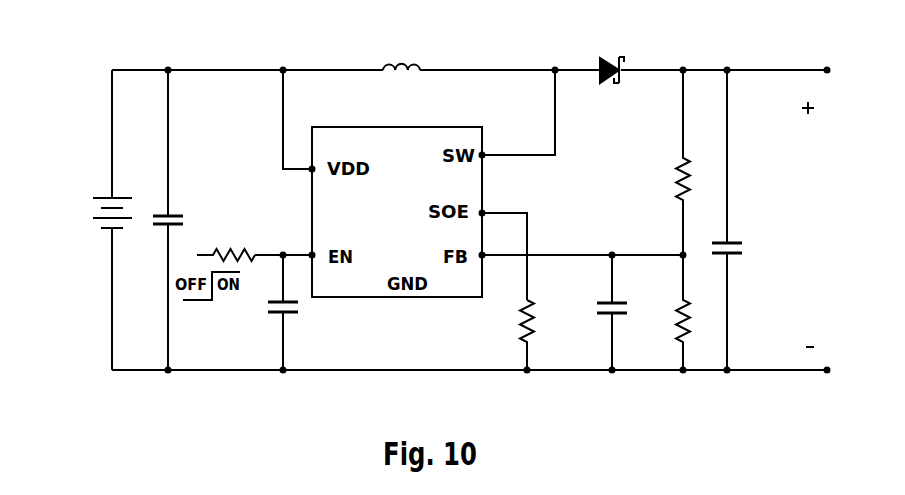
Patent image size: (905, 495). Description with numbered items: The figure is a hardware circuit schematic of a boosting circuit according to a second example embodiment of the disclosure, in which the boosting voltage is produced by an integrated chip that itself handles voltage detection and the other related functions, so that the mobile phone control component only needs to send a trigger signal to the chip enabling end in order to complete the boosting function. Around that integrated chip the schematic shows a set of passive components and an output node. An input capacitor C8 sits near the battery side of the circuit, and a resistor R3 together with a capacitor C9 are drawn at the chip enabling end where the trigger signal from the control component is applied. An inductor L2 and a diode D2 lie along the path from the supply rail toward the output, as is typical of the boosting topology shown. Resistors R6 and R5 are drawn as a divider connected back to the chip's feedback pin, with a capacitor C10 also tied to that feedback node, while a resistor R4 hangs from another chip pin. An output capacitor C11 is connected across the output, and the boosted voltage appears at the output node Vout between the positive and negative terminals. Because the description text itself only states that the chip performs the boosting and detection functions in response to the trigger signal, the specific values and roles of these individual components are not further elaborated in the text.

The input capacitor C8 is at (182, 220).
The enable resistor R3 is at (226, 243).
The enable capacitor C9 is at (297, 312).
The inductor L2 is at (401, 55).
The Schottky diode D2 is at (612, 58).
The feedback resistor (upper) R6 is at (698, 162).
The feedback resistor (lower) R5 is at (698, 312).
The SOE resistor R4 is at (542, 335).
The feedback capacitor C10 is at (632, 312).
The output capacitor C11 is at (746, 220).
The output voltage Vout is at (777, 220).